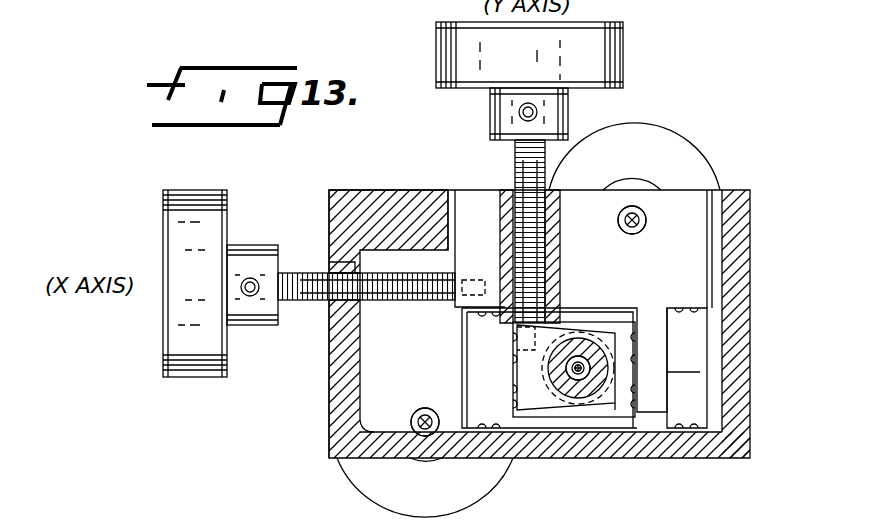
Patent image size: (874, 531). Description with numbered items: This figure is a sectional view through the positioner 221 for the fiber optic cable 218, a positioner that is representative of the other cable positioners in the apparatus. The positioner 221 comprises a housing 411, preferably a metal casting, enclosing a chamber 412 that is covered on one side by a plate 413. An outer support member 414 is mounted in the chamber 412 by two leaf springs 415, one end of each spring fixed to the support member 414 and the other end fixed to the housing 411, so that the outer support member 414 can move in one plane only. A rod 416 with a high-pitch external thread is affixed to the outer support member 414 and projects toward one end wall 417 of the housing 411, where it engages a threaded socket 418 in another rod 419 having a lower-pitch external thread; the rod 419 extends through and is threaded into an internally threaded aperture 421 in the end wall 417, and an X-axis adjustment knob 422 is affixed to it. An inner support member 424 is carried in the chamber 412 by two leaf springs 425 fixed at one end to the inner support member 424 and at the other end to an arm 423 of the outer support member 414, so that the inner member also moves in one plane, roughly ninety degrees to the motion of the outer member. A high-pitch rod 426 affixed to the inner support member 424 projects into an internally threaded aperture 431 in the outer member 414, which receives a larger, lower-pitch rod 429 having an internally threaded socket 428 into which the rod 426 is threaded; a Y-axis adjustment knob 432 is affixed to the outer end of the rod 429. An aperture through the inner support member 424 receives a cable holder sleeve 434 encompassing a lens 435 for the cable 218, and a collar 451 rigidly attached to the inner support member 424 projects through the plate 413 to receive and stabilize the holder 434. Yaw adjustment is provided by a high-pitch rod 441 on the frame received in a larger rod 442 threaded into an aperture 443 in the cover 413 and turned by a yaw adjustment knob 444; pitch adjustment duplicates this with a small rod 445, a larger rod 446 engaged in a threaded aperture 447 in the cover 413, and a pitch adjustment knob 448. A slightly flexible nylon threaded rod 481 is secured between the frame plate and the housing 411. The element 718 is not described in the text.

The housing 411 is at (757, 272).
The chamber 412 is at (480, 338).
The plate 413 is at (372, 347).
The outer support member 414 is at (700, 192).
The leaf springs 415 is at (462, 362).
The rod 416 is at (446, 302).
The end wall 417 is at (338, 377).
The threaded socket 418 is at (318, 268).
The rod 419 is at (282, 280).
The internally threaded aperture 421 is at (322, 300).
The X-axis adjustment knob 422 is at (182, 190).
The arm 423 is at (700, 372).
The inner support member 424 is at (520, 364).
The leaf springs 425 is at (568, 345).
The rod 426 is at (520, 292).
The internally threaded socket 428 is at (513, 176).
The rod 429 is at (568, 138).
The internally threaded aperture 431 is at (582, 253).
The Y-axis adjustment knob 432 is at (625, 55).
The cable holder sleeve 434 is at (578, 375).
The lens 435 is at (600, 340).
The rod 441 is at (428, 430).
The rod 442 is at (413, 423).
The aperture 443 is at (420, 410).
The yaw adjustment knob 444 is at (350, 468).
The rod 445 is at (620, 220).
The rod 446 is at (648, 222).
The threaded aperture 447 is at (636, 206).
The pitch adjustment knob 448 is at (660, 138).
The collar 451 is at (612, 330).
The threaded rod 481 is at (620, 410).
The fiber optic cable 218 is at (578, 385).
The positioner 221 is at (318, 188).
The element 718 is at (545, 525).